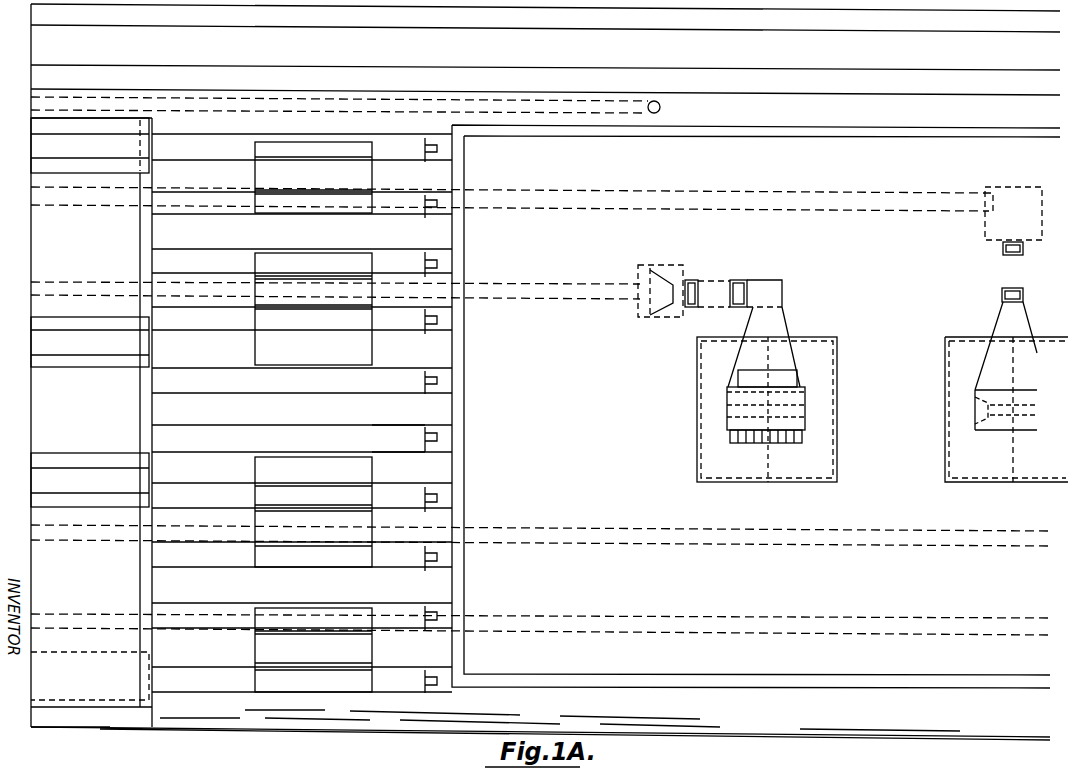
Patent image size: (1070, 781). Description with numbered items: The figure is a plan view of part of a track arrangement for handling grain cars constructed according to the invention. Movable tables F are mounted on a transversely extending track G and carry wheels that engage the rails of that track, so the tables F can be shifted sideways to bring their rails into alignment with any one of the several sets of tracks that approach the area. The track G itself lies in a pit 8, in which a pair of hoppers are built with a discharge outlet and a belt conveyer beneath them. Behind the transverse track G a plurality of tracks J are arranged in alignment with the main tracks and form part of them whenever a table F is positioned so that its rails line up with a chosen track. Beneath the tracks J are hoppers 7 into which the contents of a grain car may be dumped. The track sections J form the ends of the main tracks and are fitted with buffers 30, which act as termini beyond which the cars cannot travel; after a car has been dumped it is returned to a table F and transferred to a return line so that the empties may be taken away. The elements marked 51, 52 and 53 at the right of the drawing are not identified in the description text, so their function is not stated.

The movable table F is at (100, 165).
The transversely extending track G is at (138, 382).
The track sections J is at (376, 452).
The hoppers 7 is at (328, 358).
The pit 8 is at (125, 410).
The buffers 30 is at (430, 382).
The light source 51 is at (658, 312).
The lens element 52 is at (737, 285).
The camera unit 53 is at (968, 387).